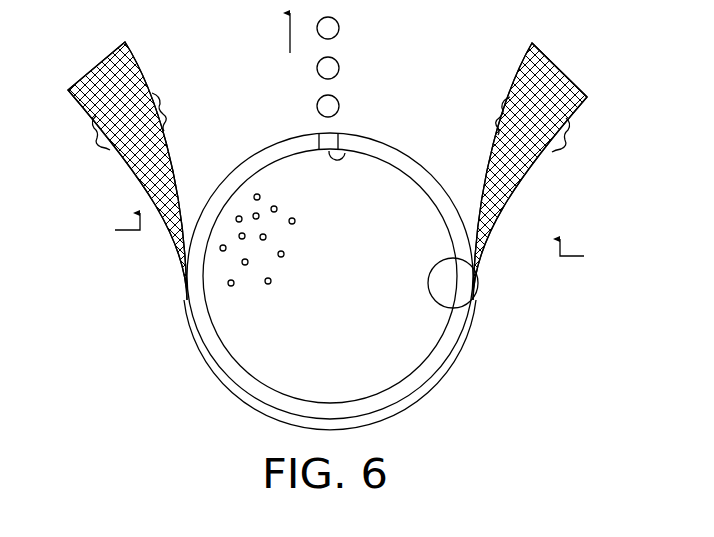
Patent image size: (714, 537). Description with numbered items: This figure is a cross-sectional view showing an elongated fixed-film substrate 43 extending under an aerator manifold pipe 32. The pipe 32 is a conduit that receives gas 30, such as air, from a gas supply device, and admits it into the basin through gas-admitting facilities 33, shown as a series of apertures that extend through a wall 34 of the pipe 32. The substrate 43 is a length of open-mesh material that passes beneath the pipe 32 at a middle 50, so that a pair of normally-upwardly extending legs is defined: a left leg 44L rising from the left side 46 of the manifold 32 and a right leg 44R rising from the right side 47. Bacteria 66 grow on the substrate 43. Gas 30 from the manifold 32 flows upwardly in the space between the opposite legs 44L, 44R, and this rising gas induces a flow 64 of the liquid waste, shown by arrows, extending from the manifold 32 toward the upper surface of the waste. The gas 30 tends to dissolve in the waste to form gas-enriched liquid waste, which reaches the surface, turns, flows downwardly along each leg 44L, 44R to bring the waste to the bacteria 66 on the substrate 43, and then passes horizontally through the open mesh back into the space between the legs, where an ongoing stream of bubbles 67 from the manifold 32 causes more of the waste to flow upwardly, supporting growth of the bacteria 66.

The gas 30 is at (229, 286).
The conduit 32 is at (228, 172).
The gas-admitting facilities 33 is at (346, 154).
The wall 34 is at (466, 314).
The elongated fixed-film substrate 43 is at (572, 110).
The left leg 44L is at (130, 60).
The right leg 44R is at (532, 54).
The left side 46 is at (113, 227).
The right side 47 is at (587, 255).
The middle 50 is at (402, 403).
The flow 64 is at (288, 33).
The bacteria 66 is at (156, 109).
The bubbles 67 is at (339, 24).